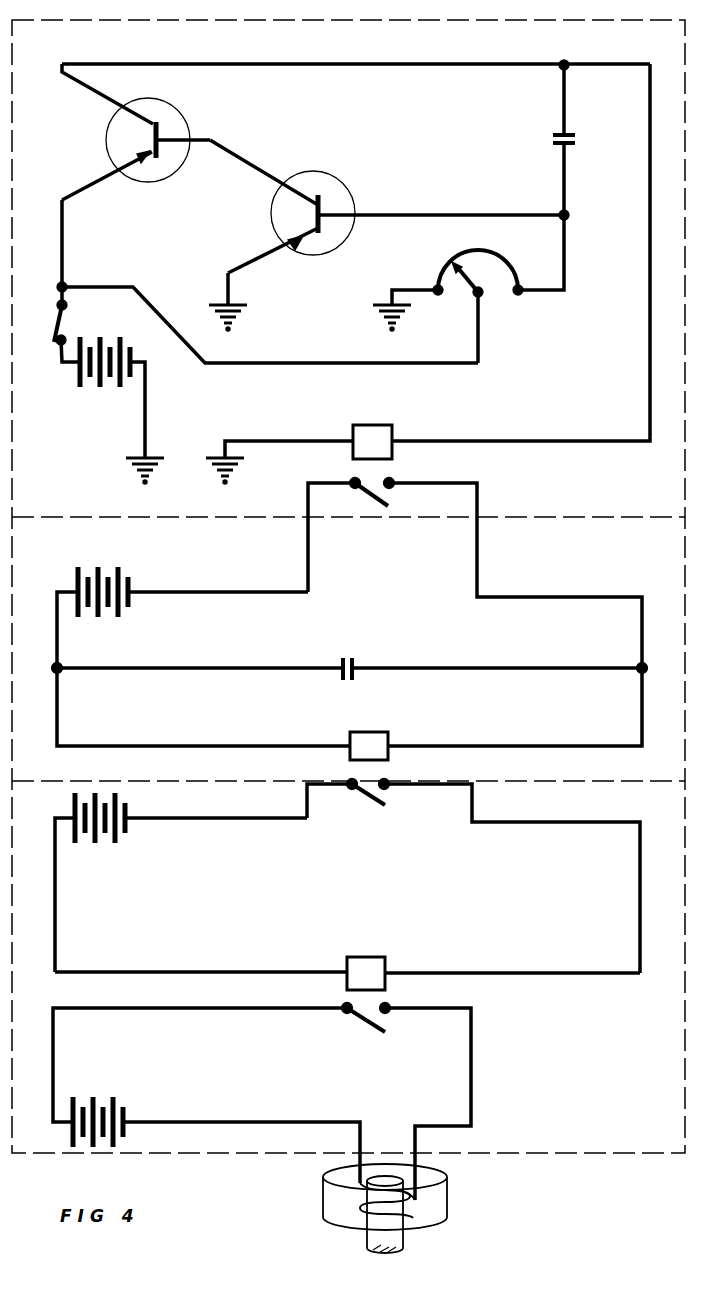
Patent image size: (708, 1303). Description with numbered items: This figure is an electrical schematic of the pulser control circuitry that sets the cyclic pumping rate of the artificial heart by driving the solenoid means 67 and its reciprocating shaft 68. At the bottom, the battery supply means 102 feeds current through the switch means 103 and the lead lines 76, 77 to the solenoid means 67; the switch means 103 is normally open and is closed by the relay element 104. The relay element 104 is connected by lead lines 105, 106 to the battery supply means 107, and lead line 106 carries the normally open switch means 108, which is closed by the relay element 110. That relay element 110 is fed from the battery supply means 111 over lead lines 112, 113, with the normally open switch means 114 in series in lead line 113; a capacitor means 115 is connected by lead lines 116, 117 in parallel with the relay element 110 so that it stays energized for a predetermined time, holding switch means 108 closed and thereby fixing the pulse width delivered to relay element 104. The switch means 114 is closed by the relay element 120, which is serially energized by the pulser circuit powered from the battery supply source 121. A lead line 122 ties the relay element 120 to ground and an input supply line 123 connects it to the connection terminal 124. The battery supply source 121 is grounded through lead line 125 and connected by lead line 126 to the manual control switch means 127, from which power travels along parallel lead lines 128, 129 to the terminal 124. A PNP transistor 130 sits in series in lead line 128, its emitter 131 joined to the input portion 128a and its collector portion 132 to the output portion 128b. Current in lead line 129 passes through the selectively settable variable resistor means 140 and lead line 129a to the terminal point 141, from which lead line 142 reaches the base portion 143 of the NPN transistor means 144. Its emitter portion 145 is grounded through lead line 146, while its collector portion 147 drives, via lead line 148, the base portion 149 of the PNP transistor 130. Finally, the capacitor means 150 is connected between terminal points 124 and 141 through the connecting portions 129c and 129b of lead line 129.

The solenoid means 67 is at (440, 1210).
The reciprocating shaft 68 is at (402, 1246).
The lead line 76 is at (356, 1182).
The lead line 77 is at (420, 1170).
The battery supply means 102 is at (100, 1098).
The switch means 103 is at (360, 1024).
The relay element 104 is at (384, 957).
The lead line 105 is at (222, 970).
The lead line 106 is at (512, 972).
The battery supply means 107 is at (128, 826).
The switch means 108 is at (376, 805).
The relay element 110 is at (376, 731).
The battery supply means 111 is at (130, 582).
The lead line 112 is at (238, 744).
The lead line 113 is at (560, 745).
The switch means 114 is at (364, 494).
The capacitor means 115 is at (355, 658).
The lead line 116 is at (240, 665).
The lead line 117 is at (547, 666).
The relay element 120 is at (372, 424).
The battery supply source 121 is at (102, 388).
The lead line 122 is at (265, 440).
The input supply line 123 is at (546, 439).
The connection terminal 124 is at (561, 60).
The lead line 125 is at (148, 428).
The lead line 126 is at (64, 370).
The manual control switch means 127 is at (56, 322).
The lead line 128 is at (64, 246).
The input portion of lead line 128a is at (90, 182).
The output portion of lead line 128b is at (88, 88).
The lead line 129 is at (97, 286).
The lead line portion 129a is at (566, 272).
The connecting portion of lead line 129b is at (566, 178).
The connecting portion of lead line 129c is at (566, 110).
The PNP transistor 130 is at (176, 106).
The transistor emitter 131 is at (128, 162).
The transistor collector portion 132 is at (148, 118).
The variable resistor means 140 is at (482, 250).
The terminal point 141 is at (570, 214).
The lead line 142 is at (442, 199).
The base portion 143 is at (336, 214).
The NPN transistor means 144 is at (343, 188).
The emitter portion 145 is at (300, 231).
The lead line 146 is at (248, 262).
The collector portion 147 is at (300, 193).
The lead line 148 is at (232, 150).
The base portion 149 is at (178, 148).
The capacitor means 150 is at (552, 134).